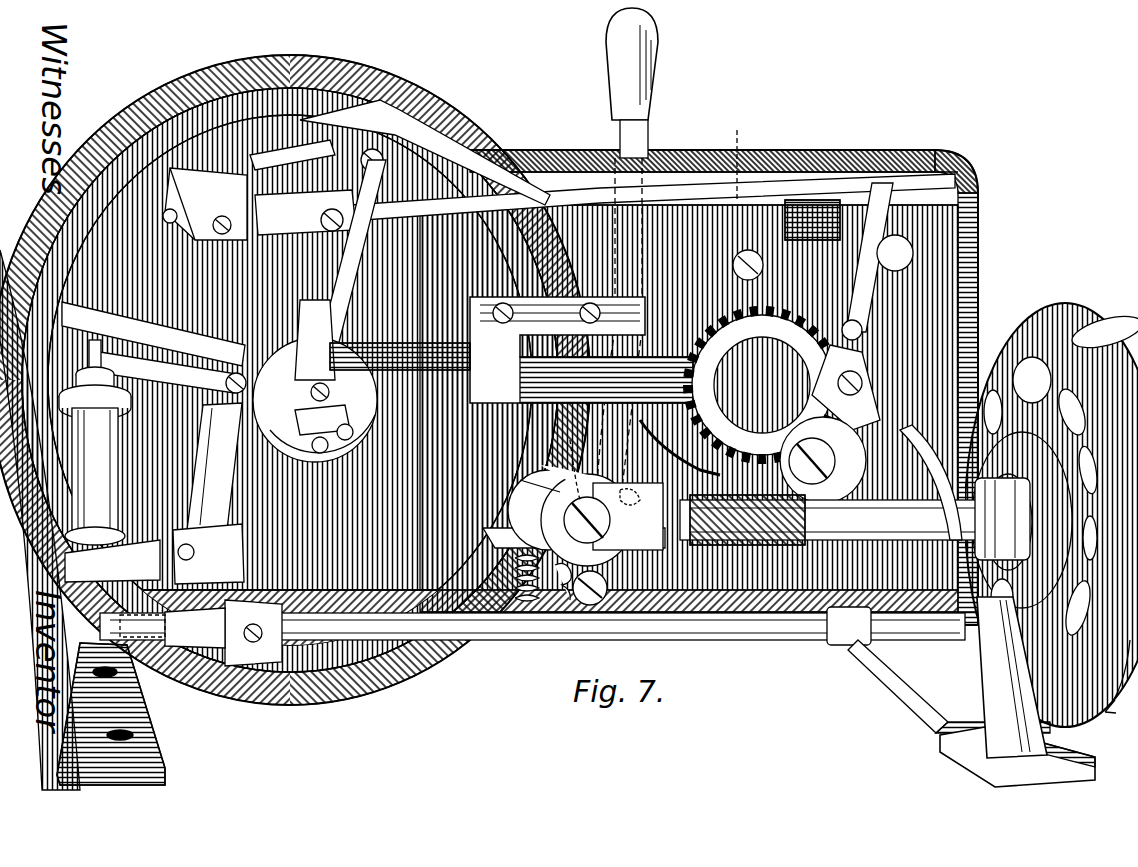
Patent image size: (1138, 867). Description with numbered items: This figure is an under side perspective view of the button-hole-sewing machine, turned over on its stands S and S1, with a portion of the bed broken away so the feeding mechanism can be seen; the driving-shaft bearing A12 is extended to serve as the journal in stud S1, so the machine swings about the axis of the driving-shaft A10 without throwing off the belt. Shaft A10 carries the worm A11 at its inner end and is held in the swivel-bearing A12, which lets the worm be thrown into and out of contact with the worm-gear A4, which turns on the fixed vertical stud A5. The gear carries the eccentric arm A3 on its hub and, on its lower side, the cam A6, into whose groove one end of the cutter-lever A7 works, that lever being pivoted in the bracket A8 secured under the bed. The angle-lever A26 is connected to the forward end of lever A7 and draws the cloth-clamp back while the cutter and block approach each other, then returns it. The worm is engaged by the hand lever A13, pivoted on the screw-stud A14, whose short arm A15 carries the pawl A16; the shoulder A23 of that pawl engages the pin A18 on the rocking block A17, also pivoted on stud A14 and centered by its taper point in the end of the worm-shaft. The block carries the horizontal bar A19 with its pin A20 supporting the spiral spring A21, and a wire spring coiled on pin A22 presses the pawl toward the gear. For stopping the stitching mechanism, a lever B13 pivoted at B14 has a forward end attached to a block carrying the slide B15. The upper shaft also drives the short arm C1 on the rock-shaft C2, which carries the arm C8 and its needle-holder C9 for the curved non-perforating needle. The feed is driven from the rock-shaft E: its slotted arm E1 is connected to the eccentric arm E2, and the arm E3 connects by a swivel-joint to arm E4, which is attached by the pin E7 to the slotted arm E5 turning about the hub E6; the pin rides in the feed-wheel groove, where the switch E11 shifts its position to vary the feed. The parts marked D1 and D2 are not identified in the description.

The stand S1 is at (1051, 515).
The stand S is at (945, 655).
The lever B13 is at (305, 50).
The pivot B14 is at (652, 197).
The slide B15 is at (786, 240).
The lever A13 is at (622, 84).
The rock-shaft C2 is at (747, 158).
The angle-lever A26 is at (425, 152).
The bracket D2 is at (292, 155).
The block D1 is at (150, 262).
The slotted arm E5 is at (153, 334).
The pin E7 is at (183, 372).
The arm C8 is at (315, 381).
The needle-holder C9 is at (328, 386).
The hub E6 is at (311, 429).
The switch E11 is at (119, 461).
The arm E4 is at (214, 466).
The arm E3 is at (208, 554).
The bracket A8 is at (511, 350).
The horizontal bar A19 is at (483, 528).
The pawl A16 is at (570, 504).
The rocking block A17 is at (628, 516).
The screw-stud A14 is at (586, 520).
The shoulder A23 is at (626, 505).
The pin A18 is at (585, 461).
The pin A20 is at (520, 480).
The worm-gear A4 is at (680, 452).
The spiral spring A21 is at (527, 605).
The pin A22 is at (562, 605).
The short arm A15 is at (590, 606).
The cutter-lever A7 is at (762, 385).
The eccentric arm A3 is at (855, 408).
The cam A6 is at (823, 460).
The fixed vertical stud A5 is at (812, 461).
The shaft A10 is at (840, 520).
The worm A11 is at (755, 520).
The swivel-bearing A12 is at (992, 519).
The eccentric arm E2 is at (931, 482).
The short arm C1 is at (877, 261).
The rock-shaft E is at (532, 633).
The slotted arm E1 is at (905, 640).